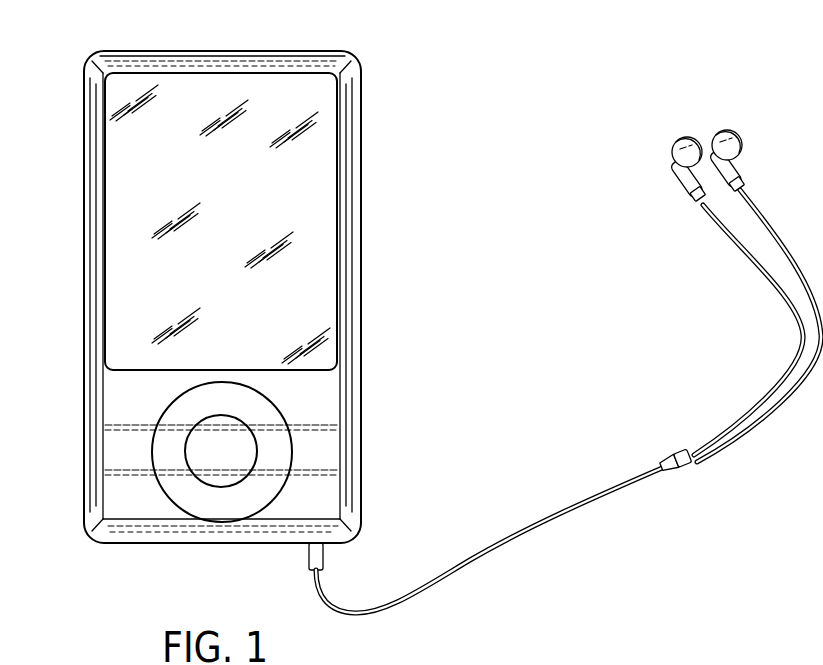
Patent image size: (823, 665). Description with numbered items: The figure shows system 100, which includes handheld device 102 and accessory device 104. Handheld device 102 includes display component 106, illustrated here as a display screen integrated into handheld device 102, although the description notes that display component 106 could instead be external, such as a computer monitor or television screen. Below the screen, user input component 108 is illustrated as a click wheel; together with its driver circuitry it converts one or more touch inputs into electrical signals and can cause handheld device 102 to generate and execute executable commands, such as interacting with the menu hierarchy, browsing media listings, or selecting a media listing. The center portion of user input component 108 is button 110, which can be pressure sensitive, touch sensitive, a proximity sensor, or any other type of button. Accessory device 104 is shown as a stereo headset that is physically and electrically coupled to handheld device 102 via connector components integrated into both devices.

The system 100 is at (244, 42).
The handheld device 102 is at (353, 63).
The accessory device 104 is at (721, 225).
The display component 106 is at (322, 236).
The user input component 108 is at (275, 452).
The button 110 is at (207, 450).